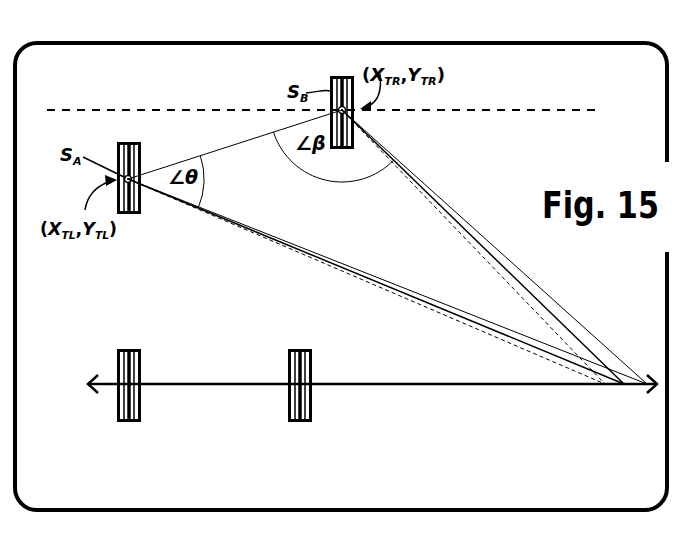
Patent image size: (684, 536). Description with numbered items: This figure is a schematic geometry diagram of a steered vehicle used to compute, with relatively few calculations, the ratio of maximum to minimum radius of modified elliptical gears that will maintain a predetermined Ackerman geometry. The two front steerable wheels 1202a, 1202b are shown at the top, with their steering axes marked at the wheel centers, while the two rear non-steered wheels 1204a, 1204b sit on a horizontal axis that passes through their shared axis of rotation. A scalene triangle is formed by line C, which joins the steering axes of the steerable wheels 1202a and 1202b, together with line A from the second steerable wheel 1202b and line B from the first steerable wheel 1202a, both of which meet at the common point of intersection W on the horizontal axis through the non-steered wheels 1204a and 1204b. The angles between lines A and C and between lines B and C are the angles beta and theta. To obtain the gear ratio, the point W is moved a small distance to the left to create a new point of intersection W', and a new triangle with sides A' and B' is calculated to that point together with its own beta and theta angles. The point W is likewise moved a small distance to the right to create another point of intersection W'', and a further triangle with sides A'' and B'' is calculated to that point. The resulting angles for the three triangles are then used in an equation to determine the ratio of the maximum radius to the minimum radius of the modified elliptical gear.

The first steerable wheel 1202a is at (129, 213).
The second steerable wheel 1202b is at (331, 80).
The non-steered wheel 1204a is at (117, 366).
The non-steered wheel 1204b is at (288, 396).
The line A is at (483, 247).
The line A' is at (494, 247).
The line A" A'' is at (496, 247).
The line B is at (376, 281).
The line B' is at (387, 281).
The line B" B'' is at (366, 281).
The line C is at (223, 151).
The common point of intersection W is at (607, 422).
The new point of intersection W' is at (555, 403).
The another point of intersection W'' is at (627, 438).